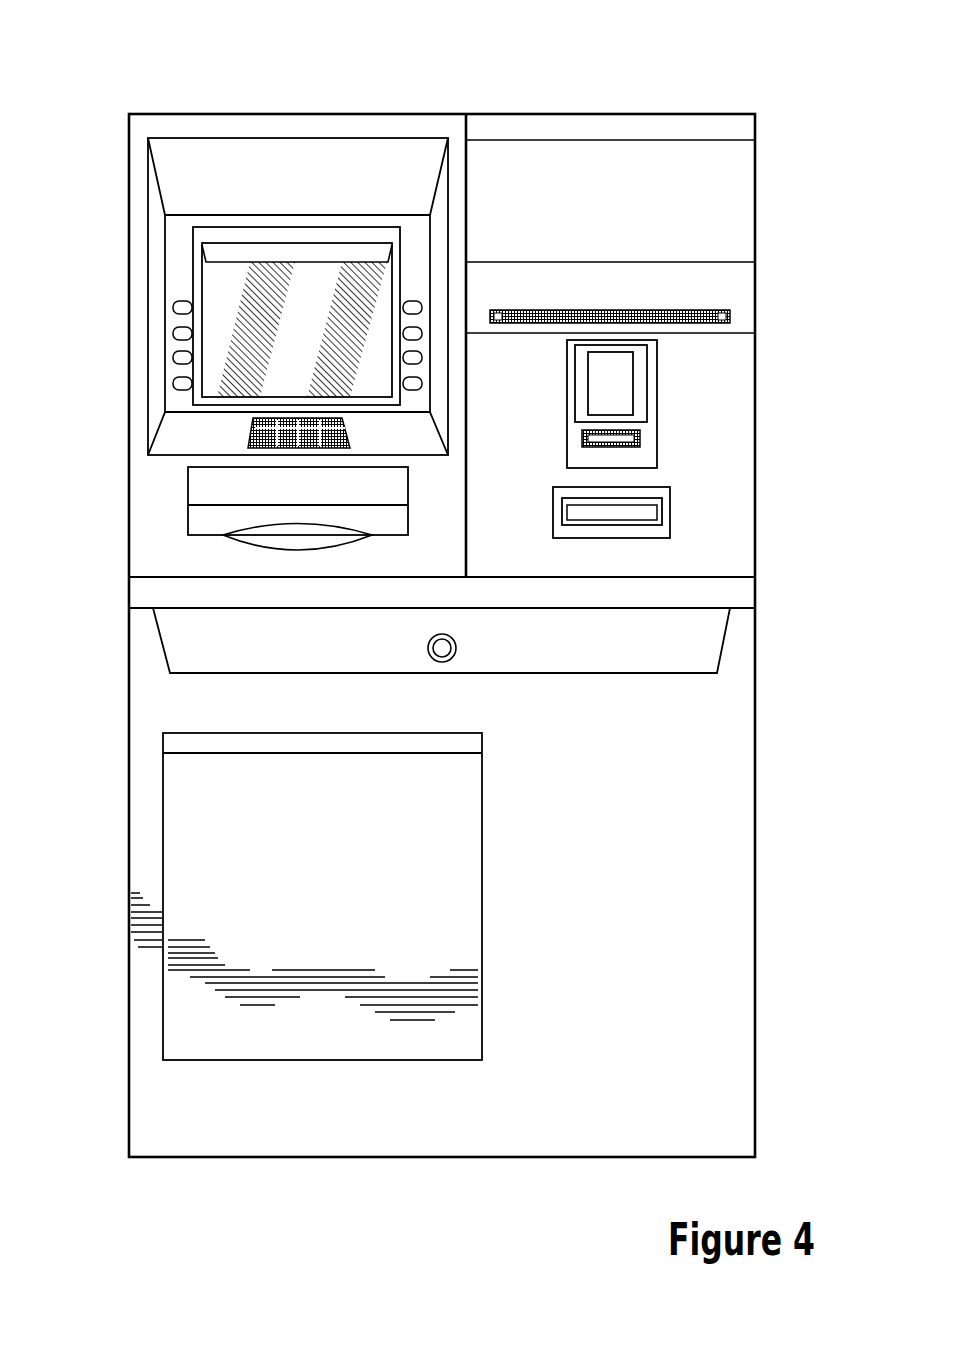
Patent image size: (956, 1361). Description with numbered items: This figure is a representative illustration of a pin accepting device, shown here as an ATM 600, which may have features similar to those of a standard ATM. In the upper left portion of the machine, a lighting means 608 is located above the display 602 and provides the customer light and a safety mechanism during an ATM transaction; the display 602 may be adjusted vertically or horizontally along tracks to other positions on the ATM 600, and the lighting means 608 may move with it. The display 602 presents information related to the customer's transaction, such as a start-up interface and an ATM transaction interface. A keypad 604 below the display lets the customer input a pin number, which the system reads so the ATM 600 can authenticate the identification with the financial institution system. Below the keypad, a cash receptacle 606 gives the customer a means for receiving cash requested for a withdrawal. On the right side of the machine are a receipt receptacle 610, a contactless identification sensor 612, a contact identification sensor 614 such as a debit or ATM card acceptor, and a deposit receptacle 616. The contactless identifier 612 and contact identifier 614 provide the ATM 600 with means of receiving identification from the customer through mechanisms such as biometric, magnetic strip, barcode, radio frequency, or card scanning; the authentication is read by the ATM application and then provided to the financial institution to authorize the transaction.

The ATM 600 is at (724, 62).
The display 602 is at (230, 291).
The keypad 604 is at (250, 445).
The cash receptacle 606 is at (186, 505).
The lighting means 608 is at (284, 170).
The receipt receptacle 610 is at (735, 318).
The contactless identification sensor 612 is at (652, 381).
The contact identification sensor 614 is at (644, 437).
The deposit receptacle 616 is at (659, 511).